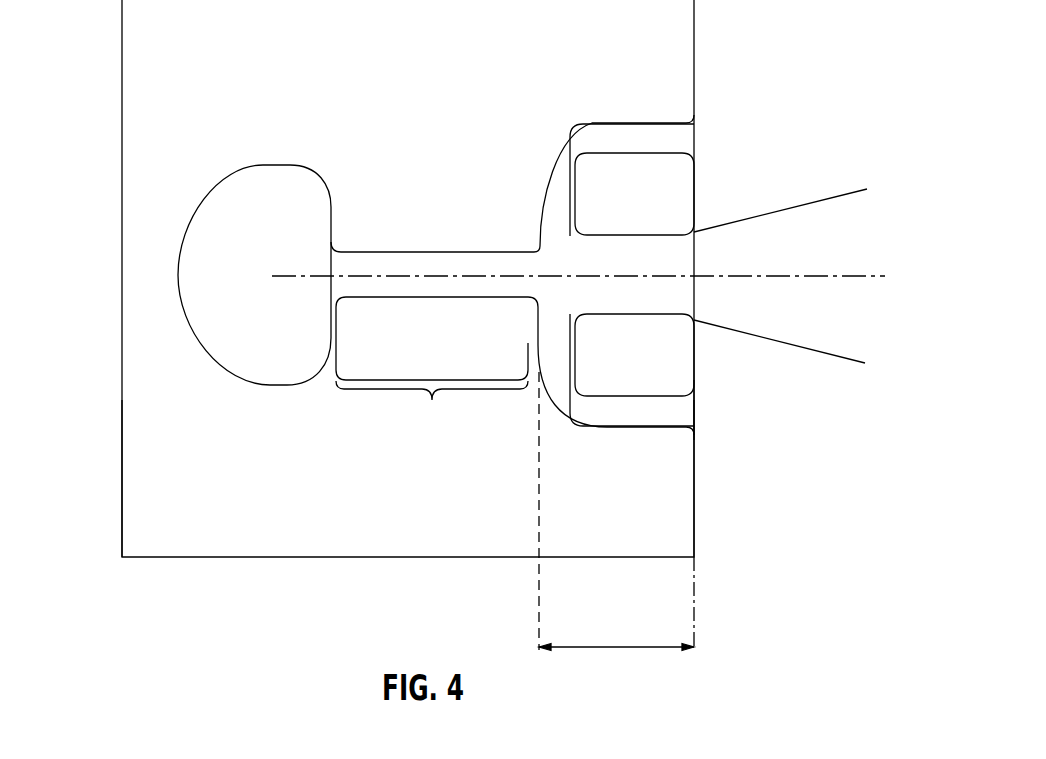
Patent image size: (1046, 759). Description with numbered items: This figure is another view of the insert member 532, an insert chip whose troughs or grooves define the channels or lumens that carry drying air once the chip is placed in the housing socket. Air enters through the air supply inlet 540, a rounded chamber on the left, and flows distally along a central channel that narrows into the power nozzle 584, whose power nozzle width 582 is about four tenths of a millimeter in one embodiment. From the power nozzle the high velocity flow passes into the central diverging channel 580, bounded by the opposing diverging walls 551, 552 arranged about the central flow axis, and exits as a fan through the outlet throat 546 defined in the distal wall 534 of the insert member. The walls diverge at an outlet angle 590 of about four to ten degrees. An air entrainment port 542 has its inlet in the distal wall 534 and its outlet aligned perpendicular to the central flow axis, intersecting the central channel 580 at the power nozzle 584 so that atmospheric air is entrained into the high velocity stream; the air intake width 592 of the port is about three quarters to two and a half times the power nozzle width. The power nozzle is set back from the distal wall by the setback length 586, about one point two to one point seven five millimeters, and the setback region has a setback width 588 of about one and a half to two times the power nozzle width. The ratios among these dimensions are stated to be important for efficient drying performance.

The insert member 532 is at (193, 456).
The distal wall 534 is at (700, 488).
The air supply inlet 540 is at (230, 278).
The air entrainment port 542 is at (693, 410).
The outlet throat 546 is at (700, 249).
The diverging wall 551 is at (615, 315).
The diverging wall 552 is at (665, 233).
The central diverging channel 580 is at (577, 272).
The power nozzle width 582 is at (487, 242).
The power nozzle 584 is at (432, 411).
The setback length 586 is at (616, 524).
The setback width 588 is at (603, 183).
The outlet angle 590 is at (807, 343).
The air intake width 592 is at (660, 492).